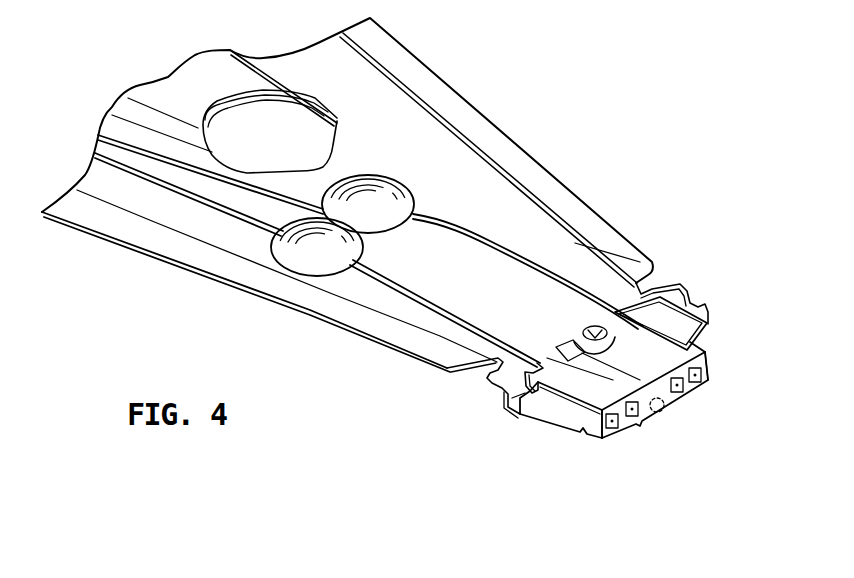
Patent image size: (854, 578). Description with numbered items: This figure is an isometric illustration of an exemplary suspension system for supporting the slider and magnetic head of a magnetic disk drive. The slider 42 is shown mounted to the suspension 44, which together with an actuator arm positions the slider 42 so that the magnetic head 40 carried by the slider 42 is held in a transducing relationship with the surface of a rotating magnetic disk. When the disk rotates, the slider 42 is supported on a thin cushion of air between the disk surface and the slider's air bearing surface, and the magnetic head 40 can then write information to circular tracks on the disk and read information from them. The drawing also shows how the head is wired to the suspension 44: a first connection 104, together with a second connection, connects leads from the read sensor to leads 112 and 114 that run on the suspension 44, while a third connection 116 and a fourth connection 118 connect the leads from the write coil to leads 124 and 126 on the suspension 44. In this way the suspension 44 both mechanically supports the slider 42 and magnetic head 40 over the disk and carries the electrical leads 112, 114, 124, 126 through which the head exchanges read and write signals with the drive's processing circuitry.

The magnetic head 40 is at (657, 421).
The slider 42 is at (548, 431).
The suspension 44 is at (375, 204).
The first connection 104 is at (598, 442).
The lead 112 is at (387, 283).
The lead 114 is at (567, 270).
The third connection 116 is at (632, 416).
The fourth connection 118 is at (679, 392).
The lead 124 is at (433, 300).
The lead 126 is at (490, 243).